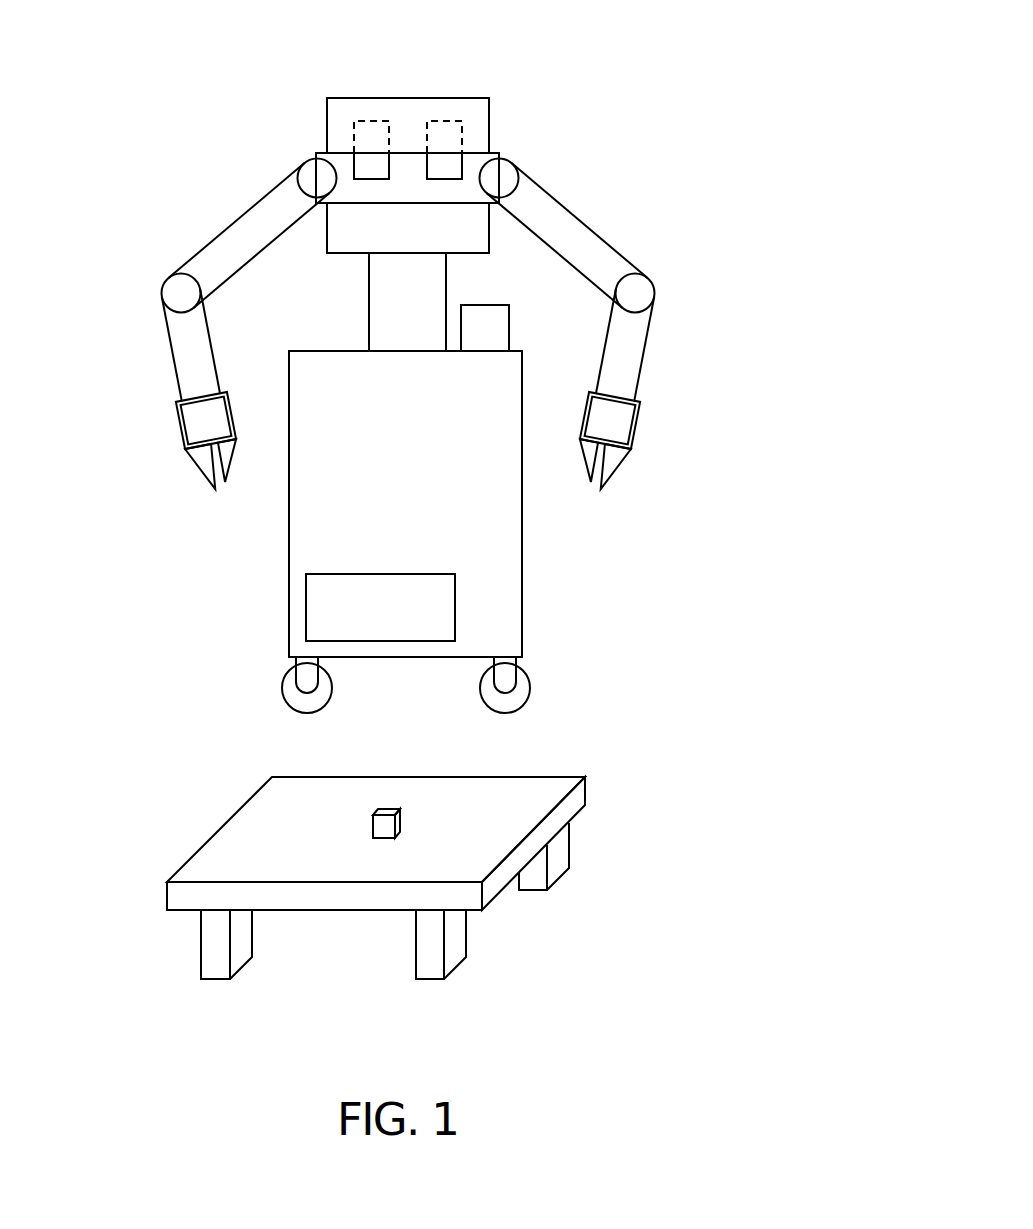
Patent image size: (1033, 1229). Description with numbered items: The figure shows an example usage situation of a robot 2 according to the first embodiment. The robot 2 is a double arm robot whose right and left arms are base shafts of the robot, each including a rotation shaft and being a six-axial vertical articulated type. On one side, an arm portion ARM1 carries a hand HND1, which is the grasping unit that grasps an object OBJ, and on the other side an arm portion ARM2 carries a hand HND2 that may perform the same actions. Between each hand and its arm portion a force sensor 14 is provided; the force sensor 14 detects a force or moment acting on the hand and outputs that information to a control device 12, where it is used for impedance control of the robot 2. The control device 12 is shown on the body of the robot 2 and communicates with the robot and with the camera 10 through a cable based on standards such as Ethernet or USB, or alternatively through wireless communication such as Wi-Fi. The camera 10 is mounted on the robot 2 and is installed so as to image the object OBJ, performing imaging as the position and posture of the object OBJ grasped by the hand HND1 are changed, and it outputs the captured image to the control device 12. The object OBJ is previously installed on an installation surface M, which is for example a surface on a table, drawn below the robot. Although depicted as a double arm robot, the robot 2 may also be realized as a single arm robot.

The robot 2 is at (680, 45).
The camera (imaging unit) 10 is at (424, 97).
The control device 12 is at (306, 622).
The force sensor 14 is at (175, 423).
The arm portion ARM1 is at (273, 124).
The arm portion ARM2 is at (722, 421).
The hand (grasping unit) HND1 is at (204, 476).
The hand HND2 is at (617, 468).
The object (grasped object) OBJ is at (388, 808).
The installation surface M is at (538, 777).